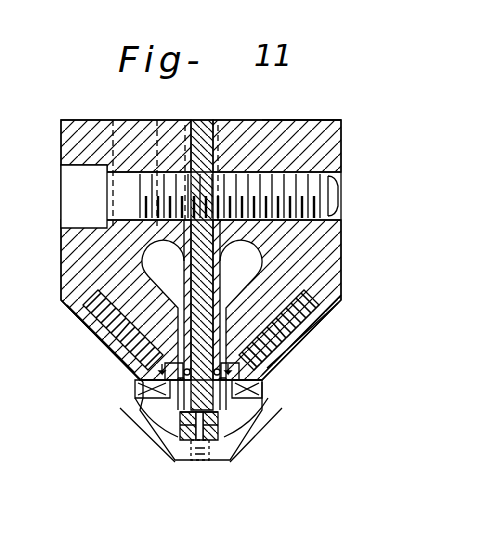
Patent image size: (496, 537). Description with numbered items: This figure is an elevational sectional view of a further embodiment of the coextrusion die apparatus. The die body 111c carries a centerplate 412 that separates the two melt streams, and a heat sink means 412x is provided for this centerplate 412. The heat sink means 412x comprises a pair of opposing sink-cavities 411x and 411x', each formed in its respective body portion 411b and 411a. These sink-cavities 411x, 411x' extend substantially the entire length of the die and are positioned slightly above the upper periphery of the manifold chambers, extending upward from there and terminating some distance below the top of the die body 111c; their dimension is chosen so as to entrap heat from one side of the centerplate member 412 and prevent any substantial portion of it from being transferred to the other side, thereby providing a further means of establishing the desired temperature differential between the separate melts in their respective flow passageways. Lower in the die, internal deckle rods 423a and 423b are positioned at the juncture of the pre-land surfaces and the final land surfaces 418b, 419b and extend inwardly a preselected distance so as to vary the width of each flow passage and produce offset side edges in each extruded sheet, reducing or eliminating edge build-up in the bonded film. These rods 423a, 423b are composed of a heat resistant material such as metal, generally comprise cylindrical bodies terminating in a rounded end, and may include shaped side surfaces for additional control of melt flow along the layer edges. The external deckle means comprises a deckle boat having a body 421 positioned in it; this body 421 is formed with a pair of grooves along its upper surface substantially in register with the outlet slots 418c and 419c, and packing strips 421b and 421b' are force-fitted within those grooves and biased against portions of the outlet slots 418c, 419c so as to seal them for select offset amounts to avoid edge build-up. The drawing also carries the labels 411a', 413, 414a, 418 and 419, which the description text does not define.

The die body 111c is at (299, 90).
The body portion 411a is at (102, 146).
The housing hidden passage 411a' is at (121, 161).
The body portion 411b is at (322, 151).
The sink-cavity 411x is at (249, 172).
The sink-cavity 411x' is at (170, 157).
The centerplate 412 is at (209, 119).
The heat sink means 412x is at (272, 119).
The inlet block 413 is at (84, 163).
The finned heater strip 414a is at (113, 328).
The right chamber 418 is at (248, 270).
The final land surface 418b is at (246, 405).
The outlet slot 418c is at (205, 442).
The left chamber 419 is at (176, 270).
The final land surface 419b is at (158, 400).
The outlet slot 419c is at (185, 403).
The body 421 is at (188, 442).
The packing strip 421b is at (252, 414).
The packing strip 421b' is at (140, 454).
The internal deckle rod 423a is at (277, 300).
The internal deckle rod 423b is at (126, 300).